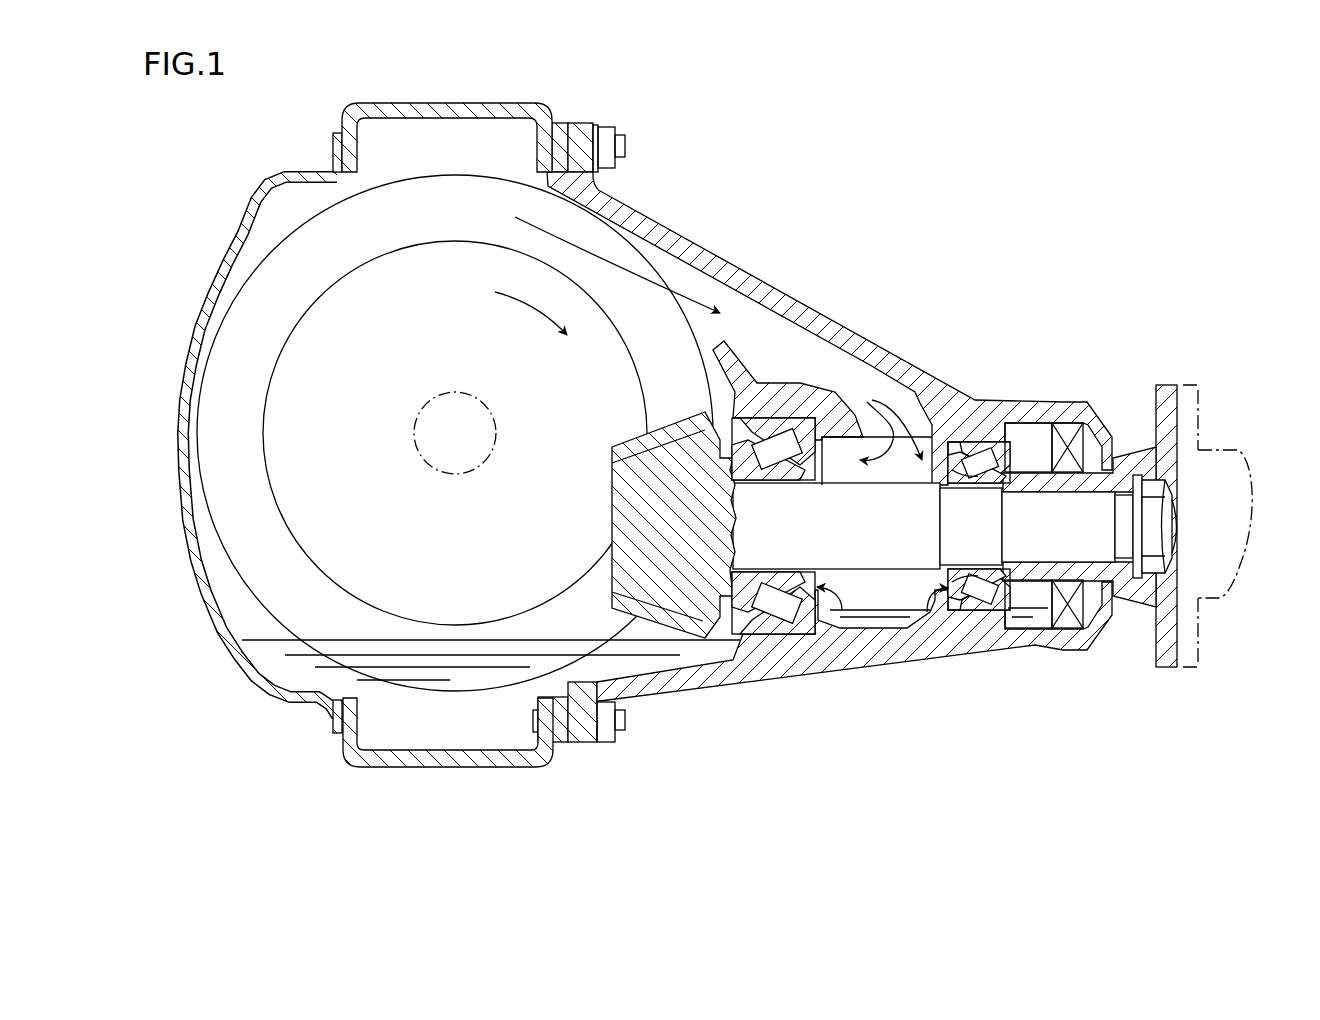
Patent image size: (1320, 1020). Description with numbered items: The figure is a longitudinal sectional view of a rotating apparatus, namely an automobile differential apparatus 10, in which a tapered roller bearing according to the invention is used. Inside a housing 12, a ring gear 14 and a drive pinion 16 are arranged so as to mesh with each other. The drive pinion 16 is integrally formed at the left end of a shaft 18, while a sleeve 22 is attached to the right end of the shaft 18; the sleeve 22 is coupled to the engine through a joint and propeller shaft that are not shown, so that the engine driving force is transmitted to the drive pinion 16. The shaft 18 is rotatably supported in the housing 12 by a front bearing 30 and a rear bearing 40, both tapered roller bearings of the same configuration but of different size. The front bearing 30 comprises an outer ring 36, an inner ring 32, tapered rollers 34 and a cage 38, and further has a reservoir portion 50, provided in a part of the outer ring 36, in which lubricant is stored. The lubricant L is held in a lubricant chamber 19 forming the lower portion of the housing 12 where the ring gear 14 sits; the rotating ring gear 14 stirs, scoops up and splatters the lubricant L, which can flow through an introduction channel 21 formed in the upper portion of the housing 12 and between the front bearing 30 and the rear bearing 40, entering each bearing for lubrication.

The differential apparatus 10 is at (957, 205).
The housing 12 is at (620, 265).
The ring gear 14 is at (418, 200).
The drive pinion 16 is at (631, 452).
The shaft 18 is at (883, 548).
The lubricant chamber 19 is at (443, 733).
The introduction channel 21 is at (745, 328).
The sleeve 22 is at (1122, 582).
The front bearing 30 is at (1070, 312).
The inner ring 32 is at (1010, 440).
The tapered rollers 34 is at (990, 447).
The outer ring 36 is at (968, 455).
The cage 38 is at (945, 470).
The rear bearing 40 is at (790, 413).
The reservoir portion 50 is at (1045, 423).
The lubricant L is at (628, 250).